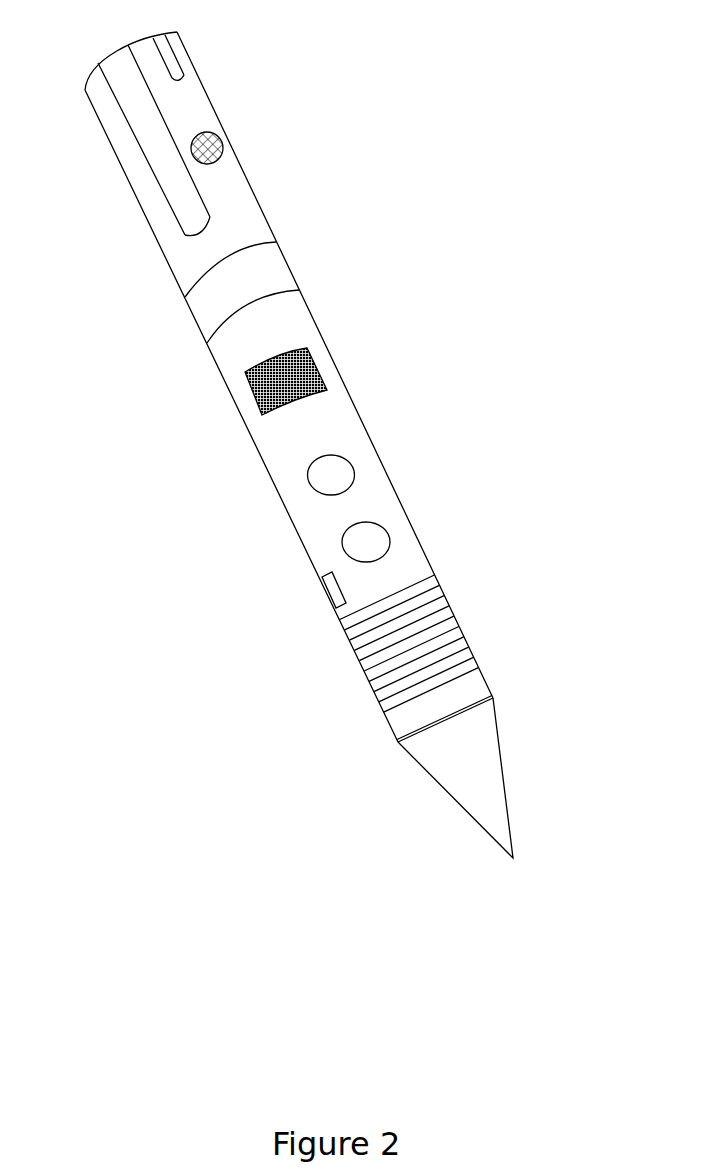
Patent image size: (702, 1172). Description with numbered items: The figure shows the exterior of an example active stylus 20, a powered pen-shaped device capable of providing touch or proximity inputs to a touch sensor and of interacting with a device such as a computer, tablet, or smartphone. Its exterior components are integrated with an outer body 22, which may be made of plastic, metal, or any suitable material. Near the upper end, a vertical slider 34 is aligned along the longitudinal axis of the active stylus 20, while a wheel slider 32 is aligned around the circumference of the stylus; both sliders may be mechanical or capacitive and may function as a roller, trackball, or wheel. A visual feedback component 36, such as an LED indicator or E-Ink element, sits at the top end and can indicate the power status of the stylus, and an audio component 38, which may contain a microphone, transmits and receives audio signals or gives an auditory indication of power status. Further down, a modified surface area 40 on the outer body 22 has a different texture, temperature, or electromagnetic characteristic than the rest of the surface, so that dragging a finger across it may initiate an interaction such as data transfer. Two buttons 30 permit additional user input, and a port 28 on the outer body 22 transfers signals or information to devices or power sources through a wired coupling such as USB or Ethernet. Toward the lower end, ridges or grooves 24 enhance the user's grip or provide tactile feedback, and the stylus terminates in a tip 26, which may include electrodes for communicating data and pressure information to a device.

The active stylus 20 is at (323, 445).
The outer body 22 is at (370, 427).
The ridges or grooves 24 is at (440, 617).
The tip 26 is at (503, 768).
The port 28 is at (327, 588).
The buttons 30 is at (345, 545).
The wheel slider 32 is at (213, 305).
The vertical slider 34 is at (145, 126).
The visual feedback component 36 is at (162, 52).
The audio component 38 is at (220, 130).
The modified surface area 40 is at (288, 370).